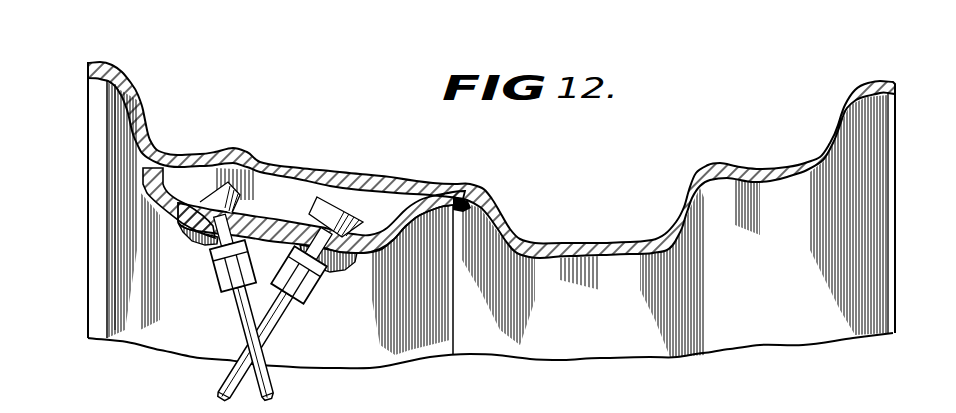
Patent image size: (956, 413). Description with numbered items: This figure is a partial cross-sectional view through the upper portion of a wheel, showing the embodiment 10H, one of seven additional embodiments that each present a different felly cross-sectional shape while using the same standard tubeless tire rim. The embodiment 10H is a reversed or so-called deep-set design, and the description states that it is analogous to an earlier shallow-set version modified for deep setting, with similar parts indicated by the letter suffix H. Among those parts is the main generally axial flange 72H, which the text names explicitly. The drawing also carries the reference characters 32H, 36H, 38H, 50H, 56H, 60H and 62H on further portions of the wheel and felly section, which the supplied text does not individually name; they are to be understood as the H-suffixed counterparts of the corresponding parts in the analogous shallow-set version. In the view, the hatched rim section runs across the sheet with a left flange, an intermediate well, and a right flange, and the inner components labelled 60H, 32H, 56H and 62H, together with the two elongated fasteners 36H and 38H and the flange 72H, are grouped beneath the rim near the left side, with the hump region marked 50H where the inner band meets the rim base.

The embodiment 10H is at (192, 116).
The bead seat band 32H is at (265, 204).
The bolt 36H is at (233, 379).
The bolt 38H is at (280, 382).
The rim base hump 50H is at (434, 200).
The band flange portion 56H is at (392, 213).
The clamp bracket 60H is at (143, 183).
The shoe 62H is at (345, 262).
The main generally axial flange 72H is at (287, 217).